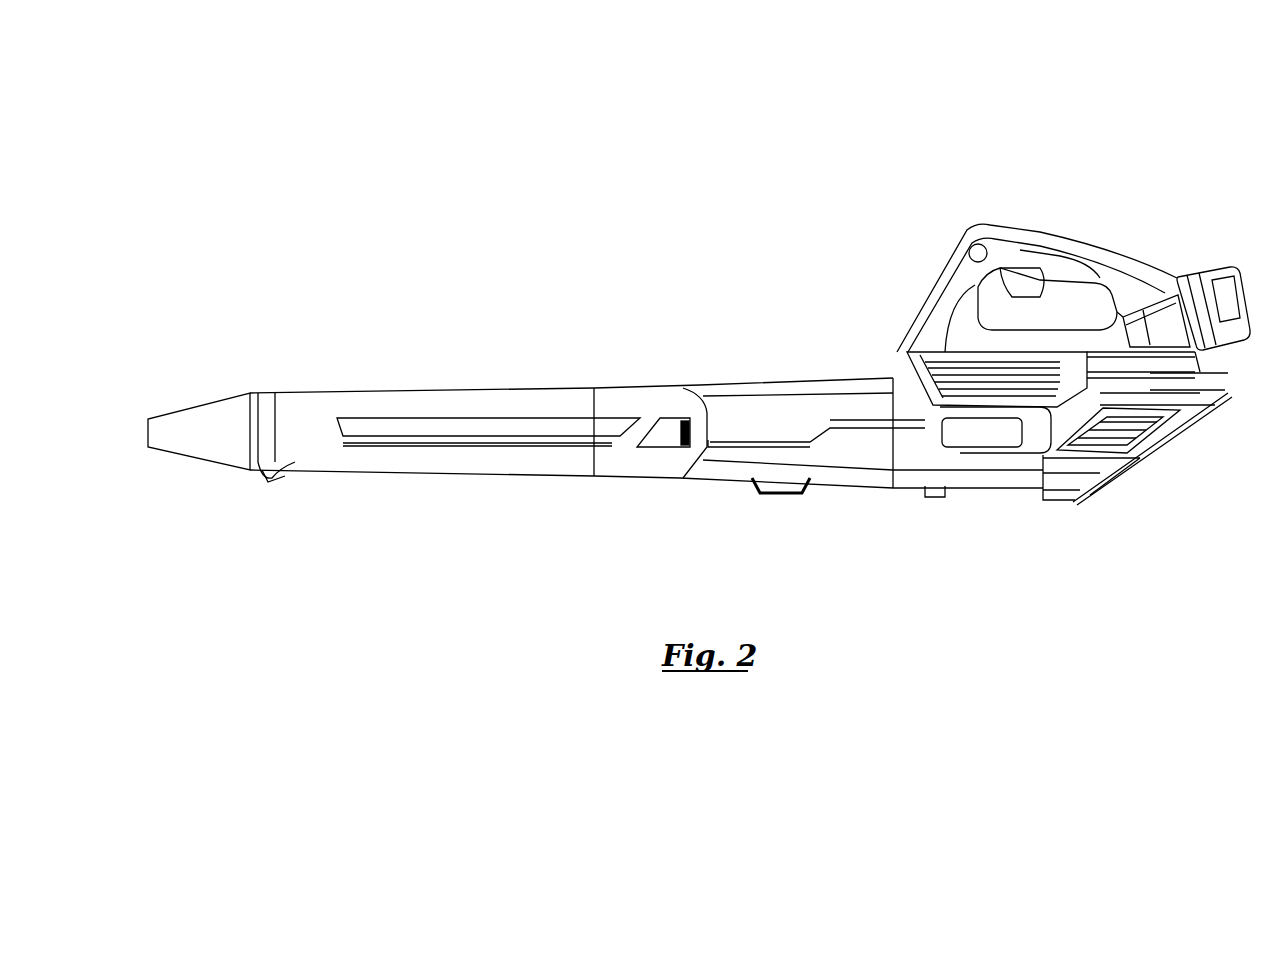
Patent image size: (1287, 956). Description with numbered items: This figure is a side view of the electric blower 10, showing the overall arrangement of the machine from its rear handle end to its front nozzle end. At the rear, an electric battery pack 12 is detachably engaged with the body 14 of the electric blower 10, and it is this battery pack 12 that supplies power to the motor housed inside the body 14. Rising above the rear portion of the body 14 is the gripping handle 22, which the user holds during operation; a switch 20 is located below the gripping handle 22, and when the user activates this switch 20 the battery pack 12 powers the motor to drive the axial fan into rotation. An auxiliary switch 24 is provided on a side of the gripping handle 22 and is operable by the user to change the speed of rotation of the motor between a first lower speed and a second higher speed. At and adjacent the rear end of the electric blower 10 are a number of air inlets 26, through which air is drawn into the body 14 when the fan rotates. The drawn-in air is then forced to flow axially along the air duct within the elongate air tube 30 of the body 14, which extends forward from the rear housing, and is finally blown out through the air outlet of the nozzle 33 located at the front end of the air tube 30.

The electric blower 10 is at (590, 308).
The electric battery pack 12 is at (1221, 375).
The body 14 is at (873, 433).
The switch 20 is at (1023, 280).
The gripping handle 22 is at (1098, 262).
The auxiliary switch 24 is at (965, 240).
The air inlets 26 is at (1118, 435).
The elongate air tube 30 is at (500, 452).
The nozzle 33 is at (200, 435).